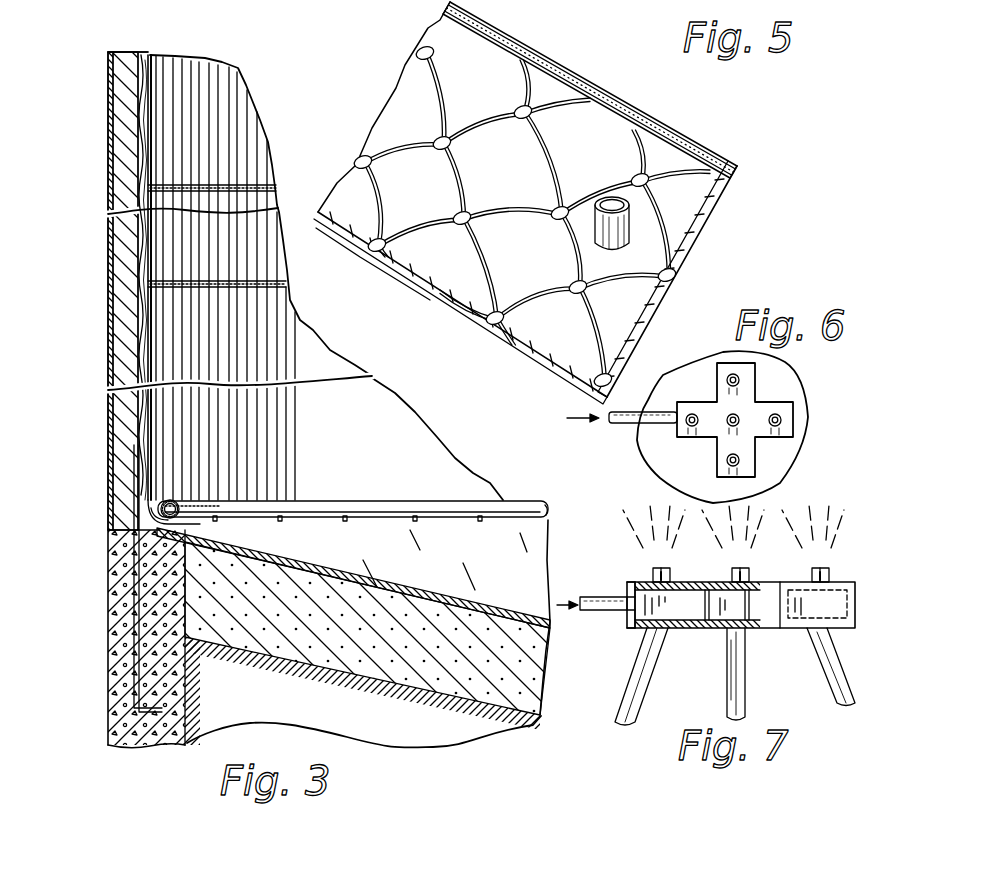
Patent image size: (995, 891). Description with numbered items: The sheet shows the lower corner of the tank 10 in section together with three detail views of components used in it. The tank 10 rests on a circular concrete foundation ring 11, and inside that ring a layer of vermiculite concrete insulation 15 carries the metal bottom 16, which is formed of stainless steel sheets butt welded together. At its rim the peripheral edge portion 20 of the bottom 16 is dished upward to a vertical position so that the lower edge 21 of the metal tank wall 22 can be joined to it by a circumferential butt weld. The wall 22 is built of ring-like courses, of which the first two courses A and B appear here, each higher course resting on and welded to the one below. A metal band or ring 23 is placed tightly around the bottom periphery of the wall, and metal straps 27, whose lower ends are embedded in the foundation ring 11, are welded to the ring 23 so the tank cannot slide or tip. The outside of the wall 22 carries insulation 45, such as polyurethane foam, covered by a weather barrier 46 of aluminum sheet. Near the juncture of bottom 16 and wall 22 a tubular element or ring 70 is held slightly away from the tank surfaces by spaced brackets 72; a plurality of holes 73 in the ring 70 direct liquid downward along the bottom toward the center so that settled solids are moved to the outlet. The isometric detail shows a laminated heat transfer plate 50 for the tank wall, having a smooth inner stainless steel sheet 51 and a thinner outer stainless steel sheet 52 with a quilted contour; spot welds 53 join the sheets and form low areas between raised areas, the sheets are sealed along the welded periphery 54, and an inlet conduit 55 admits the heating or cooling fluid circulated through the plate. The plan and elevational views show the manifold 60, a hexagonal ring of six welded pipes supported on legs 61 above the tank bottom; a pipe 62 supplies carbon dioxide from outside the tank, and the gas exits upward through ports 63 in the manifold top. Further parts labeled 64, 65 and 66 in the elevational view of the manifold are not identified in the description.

In FIG. 3, the tank 10 is at (106, 210).
In FIG. 3, the concrete foundation ring 11 is at (112, 717).
In FIG. 3, the vermiculite concrete insulation 15 is at (390, 653).
In FIG. 3, the metal bottom 16 is at (390, 587).
In FIG. 3, the peripheral edge portion 20 is at (113, 528).
In FIG. 3, the lower edge 21 is at (150, 503).
In FIG. 3, the metal tank wall 22 is at (138, 262).
In FIG. 3, the metal band or ring 23 is at (142, 490).
In FIG. 3, the metal straps 27 is at (117, 630).
In FIG. 3, the insulation 45 is at (128, 140).
In FIG. 3, the weather barrier 46 is at (112, 148).
In FIG. 3, the heat transfer plate 50 is at (155, 104).
In FIG. 5, the heat transfer plate 50 is at (683, 112).
In FIG. 3, the inner stainless steel sheet 51 is at (152, 62).
In FIG. 5, the inner stainless steel sheet 51 is at (642, 348).
In FIG. 3, the outer stainless steel sheet 52 is at (128, 66).
In FIG. 5, the outer stainless steel sheet 52 is at (472, 283).
In FIG. 5, the spot welds 53 is at (432, 141).
In FIG. 5, the periphery 54 is at (547, 75).
In FIG. 5, the inlet conduit 55 is at (632, 228).
In FIG. 6, the manifold 60 is at (758, 384).
In FIG. 7, the manifold 60 is at (622, 622).
In FIG. 7, the legs 61 is at (645, 697).
In FIG. 6, the pipe 62 is at (658, 424).
In FIG. 7, the pipe 62 is at (596, 597).
In FIG. 6, the ports 63 is at (742, 460).
In FIG. 7, the ports 63 is at (808, 577).
In FIG. 7, the nozzle 64 is at (653, 568).
In FIG. 7, the head body 65 is at (695, 628).
In FIG. 7, the inlet 66 is at (627, 613).
In FIG. 3, the tubular element or ring 70 is at (280, 502).
In FIG. 3, the brackets 72 is at (190, 503).
In FIG. 3, the holes 73 is at (293, 528).
In FIG. 3, the course A is at (112, 397).
In FIG. 3, the course B is at (143, 200).